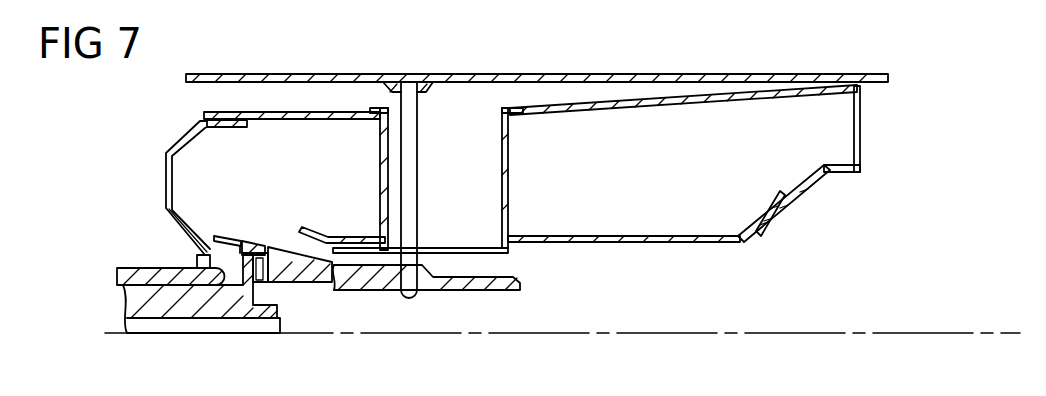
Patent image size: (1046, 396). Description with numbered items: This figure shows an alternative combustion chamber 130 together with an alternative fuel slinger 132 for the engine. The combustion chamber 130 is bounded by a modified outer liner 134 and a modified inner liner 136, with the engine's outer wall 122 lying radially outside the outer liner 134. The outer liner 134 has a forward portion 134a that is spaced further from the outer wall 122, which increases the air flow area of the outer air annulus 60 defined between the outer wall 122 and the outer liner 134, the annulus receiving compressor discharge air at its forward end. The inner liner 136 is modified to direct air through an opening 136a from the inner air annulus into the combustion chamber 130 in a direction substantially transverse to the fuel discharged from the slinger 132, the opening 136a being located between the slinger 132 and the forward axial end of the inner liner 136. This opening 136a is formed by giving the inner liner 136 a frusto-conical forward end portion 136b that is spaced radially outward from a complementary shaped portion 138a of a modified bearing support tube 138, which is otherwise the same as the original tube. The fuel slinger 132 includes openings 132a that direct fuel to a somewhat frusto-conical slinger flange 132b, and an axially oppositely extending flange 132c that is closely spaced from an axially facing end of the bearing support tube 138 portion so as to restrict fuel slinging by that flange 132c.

The outer air annulus 60 is at (227, 97).
The wall plate 122 is at (516, 78).
The combustion chamber 130 is at (162, 129).
The fuel slinger 132 is at (290, 316).
The openings 132a is at (207, 253).
The slinger flange 132b is at (214, 236).
The flange 132c is at (262, 243).
The outer liner 134 is at (609, 100).
The forward portion 134a is at (322, 112).
The inner liner 136 is at (658, 230).
The opening 136a is at (312, 246).
The frusto-conical forward end portion 136b is at (305, 227).
The bearing support tube 138 is at (510, 294).
The complementary shaped portion 138a is at (293, 247).